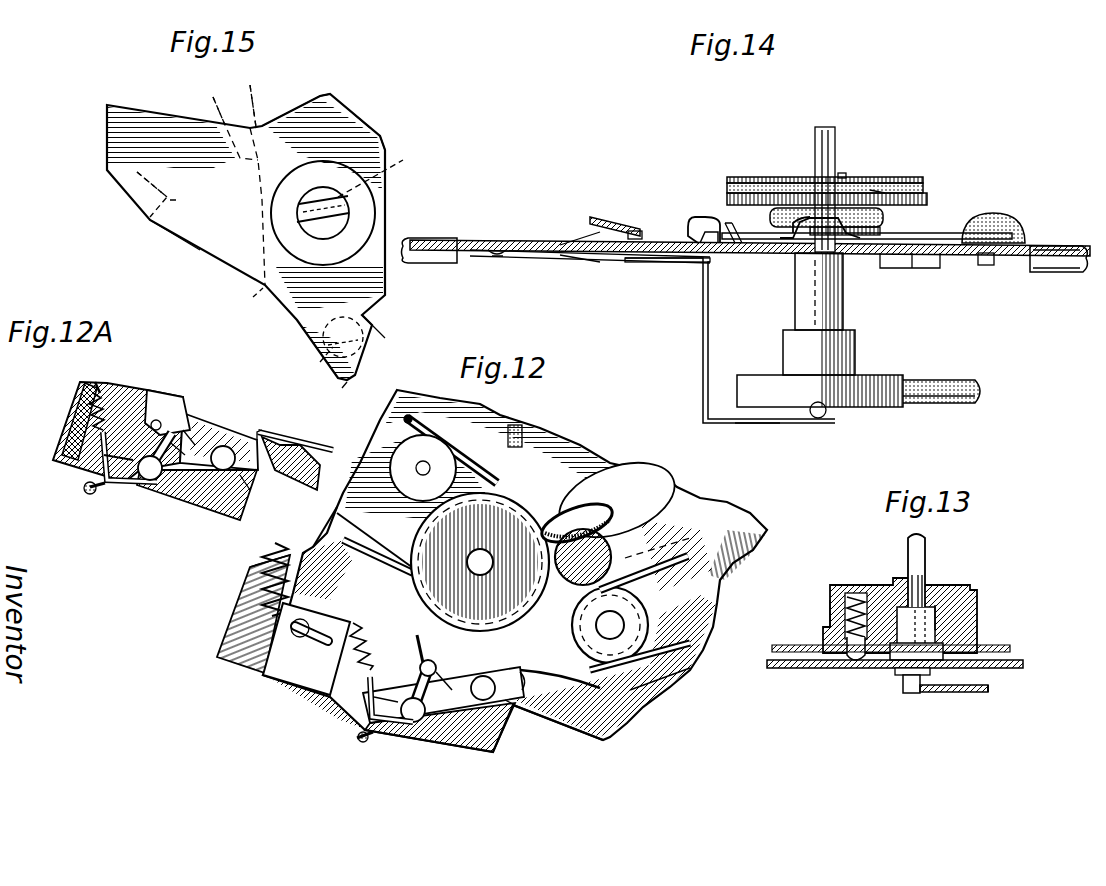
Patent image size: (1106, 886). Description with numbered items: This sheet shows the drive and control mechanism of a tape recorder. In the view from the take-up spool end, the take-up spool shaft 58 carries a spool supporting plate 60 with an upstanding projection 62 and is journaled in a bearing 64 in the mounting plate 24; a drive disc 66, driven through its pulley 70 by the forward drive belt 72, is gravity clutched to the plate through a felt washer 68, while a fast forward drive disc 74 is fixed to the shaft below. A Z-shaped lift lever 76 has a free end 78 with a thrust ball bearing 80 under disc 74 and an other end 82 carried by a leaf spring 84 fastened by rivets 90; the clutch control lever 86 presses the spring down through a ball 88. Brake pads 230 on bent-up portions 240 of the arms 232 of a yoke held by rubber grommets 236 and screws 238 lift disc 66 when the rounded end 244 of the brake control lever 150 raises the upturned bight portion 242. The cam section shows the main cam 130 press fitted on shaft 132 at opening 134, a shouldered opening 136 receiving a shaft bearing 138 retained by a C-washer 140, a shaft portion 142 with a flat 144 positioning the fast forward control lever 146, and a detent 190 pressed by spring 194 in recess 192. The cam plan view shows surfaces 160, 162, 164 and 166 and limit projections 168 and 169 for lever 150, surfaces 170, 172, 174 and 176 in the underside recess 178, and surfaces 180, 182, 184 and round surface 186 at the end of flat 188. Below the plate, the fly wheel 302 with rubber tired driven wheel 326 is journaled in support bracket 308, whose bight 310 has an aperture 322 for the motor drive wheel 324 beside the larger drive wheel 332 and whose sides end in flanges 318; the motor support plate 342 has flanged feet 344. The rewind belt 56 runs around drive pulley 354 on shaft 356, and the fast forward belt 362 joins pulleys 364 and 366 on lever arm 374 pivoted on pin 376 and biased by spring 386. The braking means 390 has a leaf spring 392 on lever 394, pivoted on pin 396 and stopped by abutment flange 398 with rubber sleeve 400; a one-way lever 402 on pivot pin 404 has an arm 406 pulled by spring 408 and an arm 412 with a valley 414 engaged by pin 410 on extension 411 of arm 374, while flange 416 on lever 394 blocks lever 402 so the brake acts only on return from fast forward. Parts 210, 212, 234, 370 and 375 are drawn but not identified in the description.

In FIG. 14, the mounting plate 24 is at (514, 231).
In FIG. 13, the mounting plate 24 is at (805, 673).
In FIG. 12, the rewind driving belt 56 is at (695, 665).
In FIG. 14, the take-up spool shaft 58 is at (825, 127).
In FIG. 14, the spool supporting plate 60 is at (900, 177).
In FIG. 14, the spool engaging projection 62 is at (843, 173).
In FIG. 14, the bearing 64 is at (845, 270).
In FIG. 14, the drive disc 66 is at (885, 212).
In FIG. 14, the felt washer 68 is at (926, 193).
In FIG. 14, the pulley 70 is at (868, 183).
In FIG. 14, the forward drive belt 72 is at (880, 190).
In FIG. 14, the fast forward drive disc 74 is at (870, 410).
In FIG. 14, the clutch controlling lift lever 76 is at (700, 310).
In FIG. 14, the free end 78 is at (782, 425).
In FIG. 14, the thrust ball bearing 80 is at (820, 420).
In FIG. 14, the other end 82 is at (645, 265).
In FIG. 14, the leaf spring 84 is at (590, 262).
In FIG. 14, the clutch control lever 86 is at (611, 213).
In FIG. 14, the ball 88 is at (620, 262).
In FIG. 14, the rivets 90 is at (498, 258).
In FIG. 15, the main cam 130 is at (222, 235).
In FIG. 13, the main cam 130 is at (882, 582).
In FIG. 15, the shaft 132 is at (318, 238).
In FIG. 13, the shaft 132 is at (925, 550).
In FIG. 13, the opening 134 is at (928, 600).
In FIG. 13, the shouldered lower opening 136 is at (940, 615).
In FIG. 13, the shaft bearing 138 is at (945, 648).
In FIG. 13, the C-washer 140 is at (900, 678).
In FIG. 13, the shaft portion 142 is at (905, 695).
In FIG. 15, the cam defining flat 144 is at (386, 171).
In FIG. 13, the cam defining flat 144 is at (938, 695).
In FIG. 13, the fast forward control lever 146 is at (988, 695).
In FIG. 14, the take-up spool brake control lever 150 is at (690, 215).
In FIG. 15, the flat surface 160 is at (372, 318).
In FIG. 15, the flat surface 162 is at (385, 210).
In FIG. 15, the rounded surface 164 is at (380, 136).
In FIG. 15, the flat surface 166 is at (340, 122).
In FIG. 15, the limit position determining projection 168 is at (322, 96).
In FIG. 15, the limit position determining projection 169 is at (385, 338).
In FIG. 15, the flat surface 170 is at (310, 100).
In FIG. 15, the rounded surface 172 is at (247, 96).
In FIG. 15, the flat surface 174 is at (213, 97).
In FIG. 15, the rounded surface 176 is at (257, 300).
In FIG. 15, the recess 178 is at (175, 158).
In FIG. 15, the flat surface 180 is at (107, 150).
In FIG. 15, the flat surface 182 is at (150, 217).
In FIG. 15, the flat surface 184 is at (180, 240).
In FIG. 15, the round surface 186 is at (347, 382).
In FIG. 15, the flat 188 is at (310, 338).
In FIG. 13, the spring pressed detent 190 is at (852, 665).
In FIG. 15, the recess 192 is at (310, 368).
In FIG. 13, the recess 192 is at (838, 607).
In FIG. 13, the spring 194 is at (850, 593).
In FIG. 14, the stop 210 is at (636, 231).
In FIG. 14, the arm 212 is at (590, 222).
In FIG. 14, the brake pads 230 is at (800, 215).
In FIG. 14, the arms 232 is at (900, 233).
In FIG. 14, the block 234 is at (915, 268).
In FIG. 14, the rubber grommets 236 is at (1030, 246).
In FIG. 14, the securing screws 238 is at (1000, 213).
In FIG. 14, the bent-up portions 240 is at (810, 216).
In FIG. 14, the upwardly bent bight portion 242 is at (728, 223).
In FIG. 14, the rounded end portion 244 is at (700, 215).
In FIG. 12, the fly wheel 302 is at (505, 415).
In FIG. 12, the support bracket 308 is at (458, 748).
In FIG. 12A, the support bracket 308 is at (180, 518).
In FIG. 12, the bight portion 310 is at (563, 716).
In FIG. 12, the flanges 318 is at (235, 640).
In FIG. 12, the aperture 322 is at (600, 485).
In FIG. 12, the drive wheel 324 is at (698, 543).
In FIG. 12, the rubber tired driven wheel 326 is at (670, 493).
In FIG. 12, the larger diameter drive wheel 332 is at (690, 525).
In FIG. 12, the supporting plate 342 is at (330, 695).
In FIG. 12A, the supporting plate 342 is at (85, 390).
In FIG. 12, the flanged feet 344 is at (306, 649).
In FIG. 12, the drive pulley 354 is at (630, 605).
In FIG. 12, the shaft 356 is at (628, 630).
In FIG. 14, the fast forward drive belt 362 is at (985, 391).
In FIG. 12, the fast forward drive belt 362 is at (440, 410).
In FIG. 12, the driving pulley 364 is at (480, 562).
In FIG. 14, the driven pulley 366 is at (945, 403).
In FIG. 12, the block 370 is at (356, 510).
In FIG. 12A, the block 370 is at (291, 463).
In FIG. 12, the lever arm 374 is at (420, 518).
In FIG. 12, the hub 375 is at (478, 572).
In FIG. 12, the common pivot pin 376 is at (416, 468).
In FIG. 12, the biasing spring 386 is at (265, 552).
In FIG. 12, the braking means 390 is at (495, 668).
In FIG. 12A, the braking means 390 is at (220, 428).
In FIG. 12, the leaf spring 392 is at (560, 679).
In FIG. 12A, the leaf spring 392 is at (310, 442).
In FIG. 12, the lever 394 is at (467, 691).
In FIG. 12A, the lever 394 is at (242, 488).
In FIG. 12, the pivot pin 396 is at (508, 708).
In FIG. 12A, the pivot pin 396 is at (248, 480).
In FIG. 12, the abutment flange 398 is at (365, 743).
In FIG. 12A, the abutment flange 398 is at (92, 495).
In FIG. 12, the rubber sleeve 400 is at (355, 735).
In FIG. 12A, the rubber sleeve 400 is at (88, 488).
In FIG. 12, the one-way acting lever 402 is at (410, 685).
In FIG. 12A, the one-way acting lever 402 is at (140, 482).
In FIG. 12, the pivot pin 404 is at (412, 722).
In FIG. 12A, the pivot pin 404 is at (165, 490).
In FIG. 12, the arm 406 is at (365, 703).
In FIG. 12A, the arm 406 is at (106, 449).
In FIG. 12, the spring 408 is at (417, 635).
In FIG. 12A, the spring 408 is at (102, 392).
In FIG. 12, the brake operating pin 410 is at (410, 650).
In FIG. 12A, the brake operating pin 410 is at (150, 418).
In FIG. 12, the forwardly extending portion 411 is at (430, 660).
In FIG. 12A, the forwardly extending portion 411 is at (163, 400).
In FIG. 12, the arm 412 is at (470, 686).
In FIG. 12A, the arm 412 is at (185, 430).
In FIG. 12, the rounded valley 414 is at (460, 672).
In FIG. 12A, the rounded valley 414 is at (190, 405).
In FIG. 12, the flange 416 is at (362, 720).
In FIG. 12A, the flange 416 is at (103, 470).